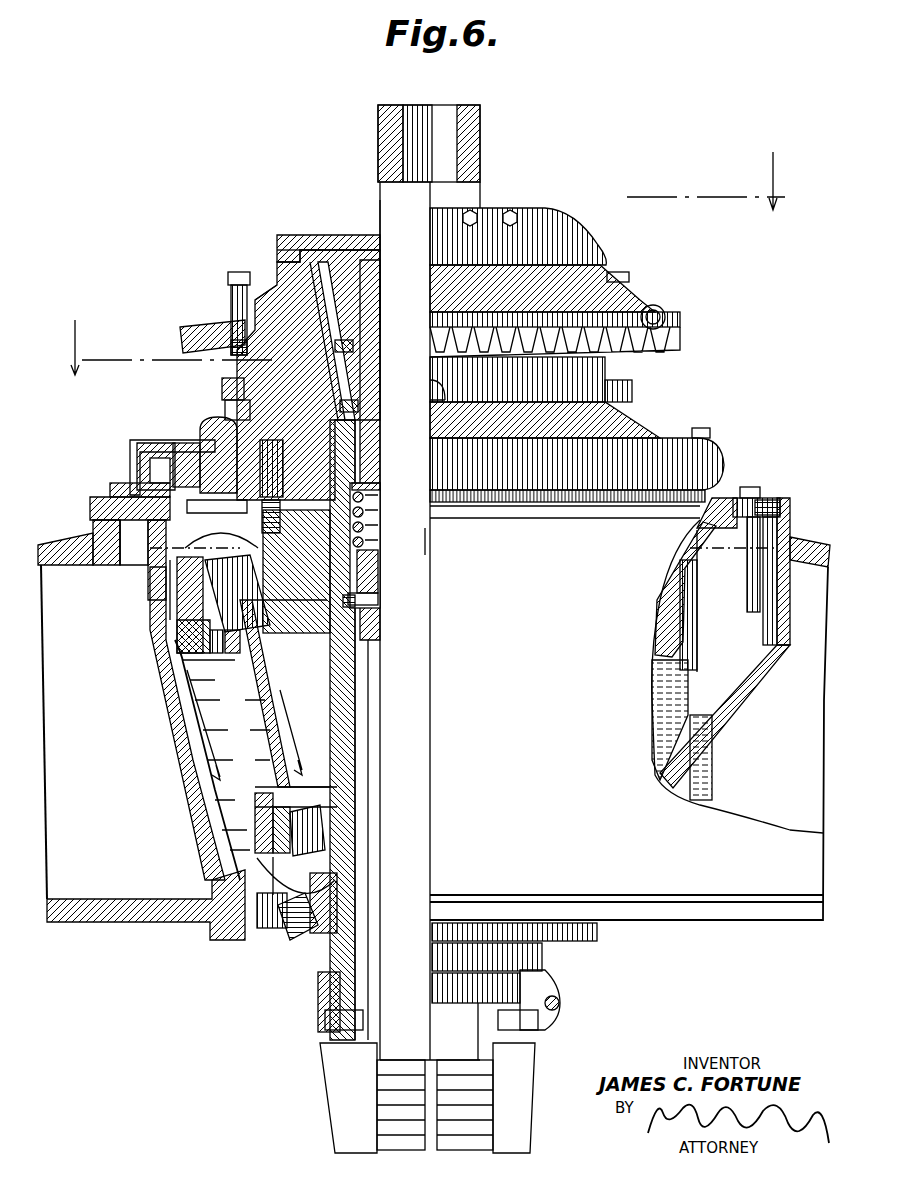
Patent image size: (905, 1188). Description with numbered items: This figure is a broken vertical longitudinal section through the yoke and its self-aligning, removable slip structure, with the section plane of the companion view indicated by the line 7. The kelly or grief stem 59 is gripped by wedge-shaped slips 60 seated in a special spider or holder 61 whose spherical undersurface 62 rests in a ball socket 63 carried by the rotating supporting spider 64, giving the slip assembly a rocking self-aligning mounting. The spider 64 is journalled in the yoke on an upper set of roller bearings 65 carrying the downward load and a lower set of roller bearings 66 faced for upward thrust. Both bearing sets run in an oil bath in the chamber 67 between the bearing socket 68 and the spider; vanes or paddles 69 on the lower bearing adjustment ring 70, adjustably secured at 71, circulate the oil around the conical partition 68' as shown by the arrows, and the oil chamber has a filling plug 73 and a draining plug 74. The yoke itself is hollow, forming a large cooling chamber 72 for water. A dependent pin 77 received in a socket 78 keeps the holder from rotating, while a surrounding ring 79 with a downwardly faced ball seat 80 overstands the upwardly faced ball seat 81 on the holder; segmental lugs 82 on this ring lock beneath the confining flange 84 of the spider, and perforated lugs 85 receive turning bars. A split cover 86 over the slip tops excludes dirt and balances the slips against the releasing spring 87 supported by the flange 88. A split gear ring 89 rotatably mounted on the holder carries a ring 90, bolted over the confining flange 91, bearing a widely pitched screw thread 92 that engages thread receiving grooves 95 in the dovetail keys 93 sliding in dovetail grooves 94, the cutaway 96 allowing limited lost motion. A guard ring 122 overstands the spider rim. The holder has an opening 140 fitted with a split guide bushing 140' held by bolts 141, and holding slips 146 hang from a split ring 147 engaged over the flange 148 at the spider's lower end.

The kelly or grief stem 59 is at (470, 186).
The wedge-shaped slips 60 is at (384, 346).
The spider or holder 61 is at (287, 325).
The spherical or rounded undersurface 62 is at (230, 420).
The ball socket 63 is at (225, 430).
The rotating supporting spider 64 is at (385, 655).
The upper set of roller bearings 65 is at (235, 585).
The lower set of roller bearings 66 is at (360, 812).
The oil chamber 67 is at (740, 648).
The bearing socket 68 is at (183, 760).
The conical partition 68' is at (285, 693).
The vanes or paddles 69 is at (288, 932).
The lower bearing adjustment ring 70 is at (345, 880).
The securing point of adjustment ring 71 is at (330, 905).
The cooling chamber 72 is at (433, 718).
The filling plug 73 is at (770, 505).
The draining plug 74 is at (290, 945).
The dependent pin 77 is at (175, 533).
The socket 78 is at (200, 550).
The surrounding ring 79 is at (640, 425).
The downwardly faced ball seat 80 is at (230, 398).
The upwardly faced ball seat 81 is at (240, 382).
The segmental lugs 82 is at (125, 486).
The confining flange 84 is at (170, 440).
The perforated lugs 85 is at (633, 387).
The cover 86 is at (550, 245).
The slip releasing spring 87 is at (380, 495).
The flange 88 is at (378, 563).
The split gear ring 89 is at (680, 345).
The ring 90 is at (290, 278).
The confining flange 91 is at (250, 305).
The screw thread 92 is at (330, 262).
The dovetail keys 93 is at (347, 355).
The dovetail grooves 94 is at (365, 530).
The thread receiving grooves 95 is at (352, 420).
The cutaway space 96 is at (293, 255).
The guard ring 122 is at (720, 455).
The opening 140 is at (450, 548).
The guide bushing 140' is at (392, 599).
The bolts 141 is at (343, 598).
The holding slips 146 is at (338, 1112).
The split ring 147 is at (550, 978).
The flange 148 is at (322, 1003).
The section line 7- 7 is at (428, 263).